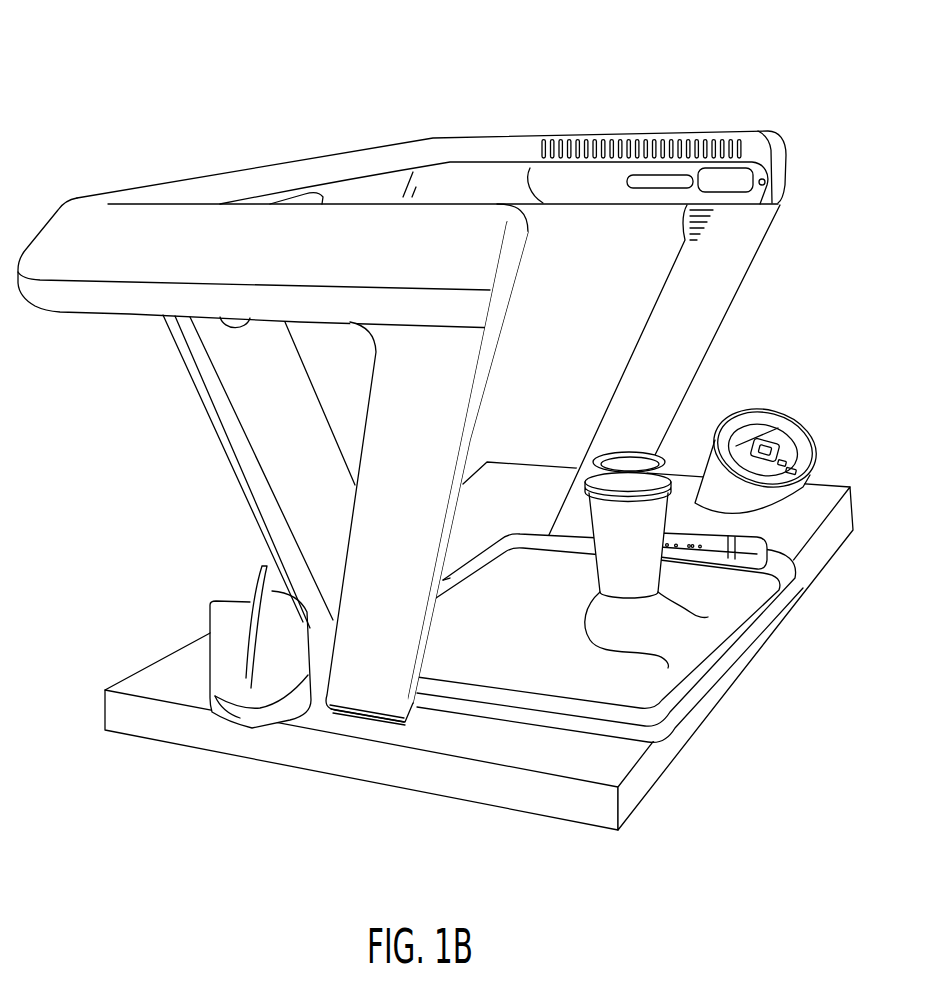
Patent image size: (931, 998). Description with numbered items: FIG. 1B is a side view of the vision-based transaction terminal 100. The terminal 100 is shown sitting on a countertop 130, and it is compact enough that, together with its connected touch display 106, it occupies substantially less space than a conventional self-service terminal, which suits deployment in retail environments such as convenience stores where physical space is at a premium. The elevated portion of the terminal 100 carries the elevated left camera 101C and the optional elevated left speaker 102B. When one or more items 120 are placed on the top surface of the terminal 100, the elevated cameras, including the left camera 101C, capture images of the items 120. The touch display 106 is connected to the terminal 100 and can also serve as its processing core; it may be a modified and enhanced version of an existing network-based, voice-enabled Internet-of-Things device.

The vision-based transaction terminal 100 is at (210, 63).
The elevated left speaker 102B is at (572, 151).
The elevated left camera 101C is at (647, 181).
The items 120 is at (593, 453).
The touch display 106 is at (785, 414).
The countertop 130 is at (117, 715).